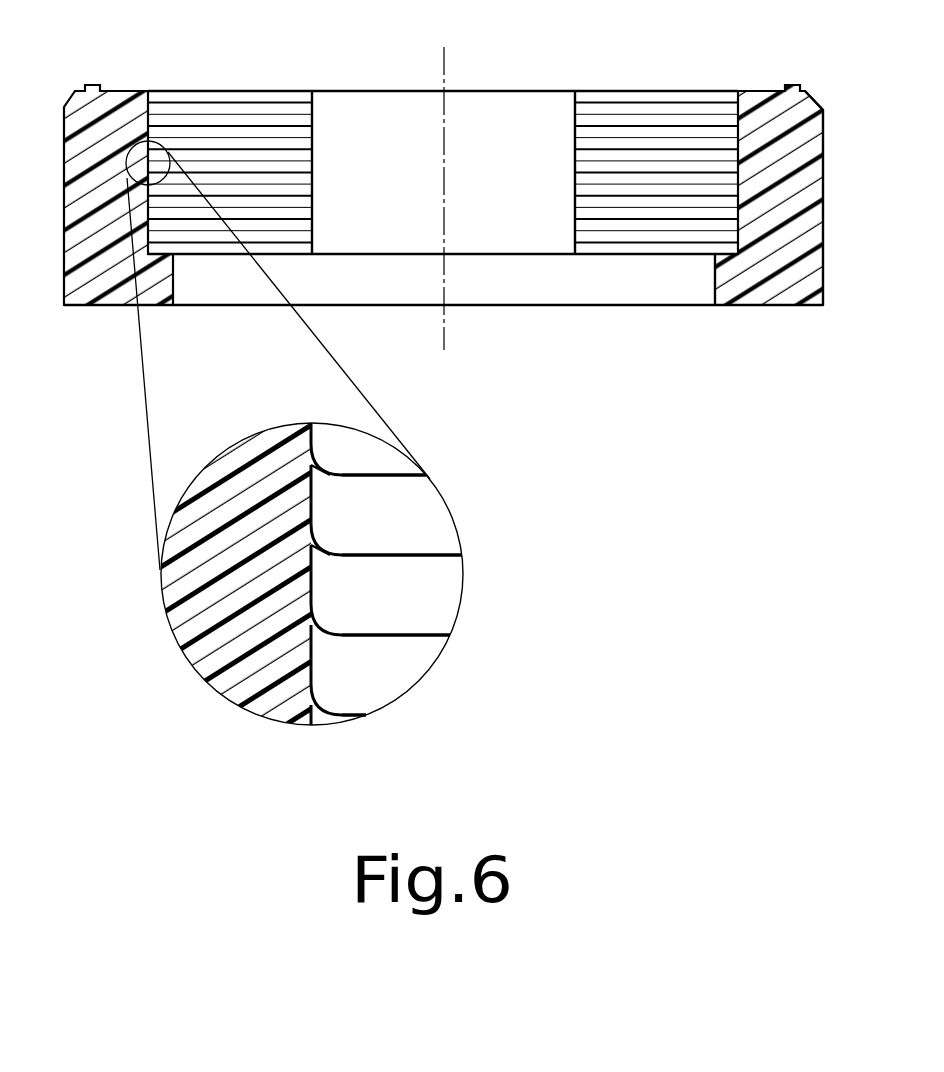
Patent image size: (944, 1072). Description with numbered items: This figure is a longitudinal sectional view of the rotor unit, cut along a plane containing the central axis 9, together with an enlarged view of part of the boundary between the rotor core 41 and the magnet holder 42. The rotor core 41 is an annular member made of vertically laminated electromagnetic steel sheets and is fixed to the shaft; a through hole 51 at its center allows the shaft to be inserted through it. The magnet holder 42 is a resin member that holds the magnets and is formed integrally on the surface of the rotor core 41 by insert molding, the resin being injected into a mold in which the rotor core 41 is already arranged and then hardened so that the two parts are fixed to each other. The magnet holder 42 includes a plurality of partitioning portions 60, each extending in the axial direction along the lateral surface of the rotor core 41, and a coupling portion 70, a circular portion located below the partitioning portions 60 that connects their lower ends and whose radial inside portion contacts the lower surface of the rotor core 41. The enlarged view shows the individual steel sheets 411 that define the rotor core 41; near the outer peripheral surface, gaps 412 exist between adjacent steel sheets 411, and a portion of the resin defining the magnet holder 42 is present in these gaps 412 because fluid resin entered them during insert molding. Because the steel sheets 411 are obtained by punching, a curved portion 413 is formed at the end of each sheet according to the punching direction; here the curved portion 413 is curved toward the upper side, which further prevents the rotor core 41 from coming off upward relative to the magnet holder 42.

The central axis 9 is at (444, 66).
The through hole 51 is at (518, 140).
The rotor core 41 is at (642, 120).
The magnet holder 42 is at (769, 265).
The partitioning portion 60 is at (793, 280).
The coupling portion 70 is at (740, 282).
The steel sheet 411 is at (405, 513).
The gap 412 is at (322, 543).
The curved portion 413 is at (320, 587).